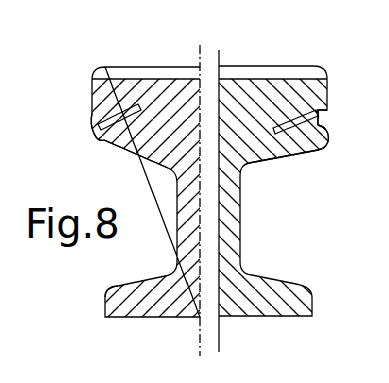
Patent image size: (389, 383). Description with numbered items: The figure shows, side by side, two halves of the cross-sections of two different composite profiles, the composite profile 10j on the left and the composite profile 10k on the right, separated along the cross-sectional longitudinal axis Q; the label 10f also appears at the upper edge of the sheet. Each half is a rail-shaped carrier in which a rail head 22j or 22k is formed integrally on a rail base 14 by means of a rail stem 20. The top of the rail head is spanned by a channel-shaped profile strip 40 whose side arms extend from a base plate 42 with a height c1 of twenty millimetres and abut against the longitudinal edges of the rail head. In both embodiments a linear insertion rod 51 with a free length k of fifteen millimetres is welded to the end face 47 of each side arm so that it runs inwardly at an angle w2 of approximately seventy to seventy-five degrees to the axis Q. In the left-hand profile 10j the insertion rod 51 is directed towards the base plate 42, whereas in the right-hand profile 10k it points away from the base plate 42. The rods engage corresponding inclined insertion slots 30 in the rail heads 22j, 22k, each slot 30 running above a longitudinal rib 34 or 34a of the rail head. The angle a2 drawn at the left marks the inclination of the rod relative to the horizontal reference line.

The composite profile 10j is at (128, 260).
The composite profile 10k is at (262, 258).
The rail profile 10f is at (312, 6).
The rail base 14 is at (115, 302).
The rail stem 20 is at (149, 226).
The rail head 22j is at (112, 99).
The rail head 22k is at (265, 152).
The insertion slot 30 is at (311, 146).
The longitudinal rib 34 is at (100, 141).
The longitudinal rib 34a is at (319, 138).
The profile strip 40 is at (163, 65).
The base plate 42 is at (178, 68).
The end face 47 is at (325, 108).
The insertion rod 51 is at (123, 99).
The cross-sectional longitudinal axis Q is at (197, 343).
The height of side arms c1 is at (100, 115).
The angle a2 is at (100, 122).
The free length of insertion rod k is at (118, 150).
The angle of insertion rod w2 is at (198, 137).